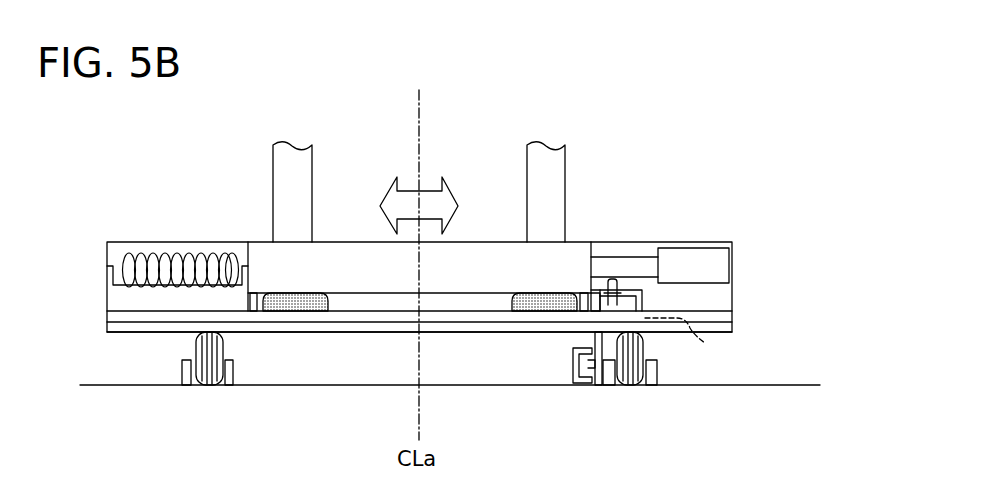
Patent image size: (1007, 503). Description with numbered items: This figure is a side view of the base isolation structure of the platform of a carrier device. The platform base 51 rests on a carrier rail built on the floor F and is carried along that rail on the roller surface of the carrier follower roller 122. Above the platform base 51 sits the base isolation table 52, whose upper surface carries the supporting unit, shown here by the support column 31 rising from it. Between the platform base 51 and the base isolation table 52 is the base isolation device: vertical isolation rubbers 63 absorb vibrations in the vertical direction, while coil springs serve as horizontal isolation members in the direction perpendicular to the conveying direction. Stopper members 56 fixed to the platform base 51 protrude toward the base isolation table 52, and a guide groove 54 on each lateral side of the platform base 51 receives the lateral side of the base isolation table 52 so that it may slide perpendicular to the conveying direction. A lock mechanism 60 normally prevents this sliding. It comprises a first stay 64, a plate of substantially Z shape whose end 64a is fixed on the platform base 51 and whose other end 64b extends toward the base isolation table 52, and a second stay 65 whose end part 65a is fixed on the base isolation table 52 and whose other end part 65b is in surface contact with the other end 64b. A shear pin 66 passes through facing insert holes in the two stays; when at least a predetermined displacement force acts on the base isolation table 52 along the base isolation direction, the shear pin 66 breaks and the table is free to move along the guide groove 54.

The support column 31 is at (566, 178).
The platform base 51 is at (137, 332).
The base isolation table 52 is at (493, 242).
The guide groove 54 is at (112, 316).
The stopper member 56 is at (240, 301).
The lock mechanism 60 is at (675, 272).
The vertical isolation rubber 63 is at (499, 311).
The first stay 64 is at (652, 299).
The end of first stay 64a is at (697, 338).
The other end of first stay 64b is at (598, 300).
The second stay 65 is at (613, 285).
The end part of second stay 65a is at (600, 290).
The other end part of second stay 65b is at (650, 280).
The shear pin 66 is at (615, 305).
The carrier follower roller 122 is at (648, 344).
The floor F is at (800, 385).